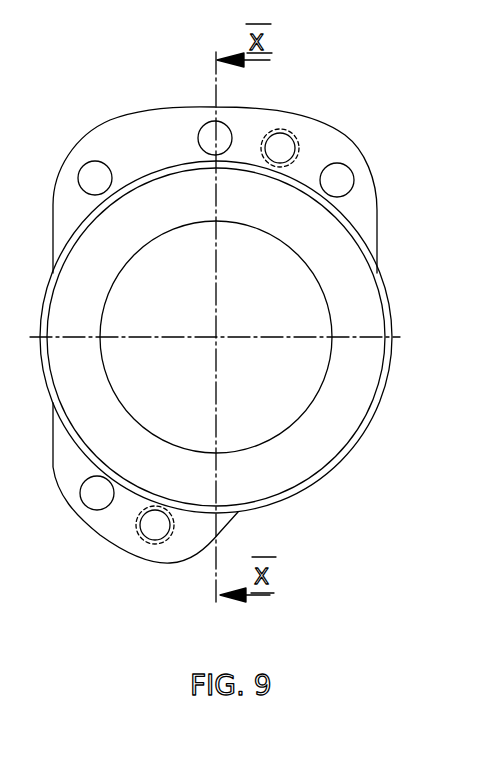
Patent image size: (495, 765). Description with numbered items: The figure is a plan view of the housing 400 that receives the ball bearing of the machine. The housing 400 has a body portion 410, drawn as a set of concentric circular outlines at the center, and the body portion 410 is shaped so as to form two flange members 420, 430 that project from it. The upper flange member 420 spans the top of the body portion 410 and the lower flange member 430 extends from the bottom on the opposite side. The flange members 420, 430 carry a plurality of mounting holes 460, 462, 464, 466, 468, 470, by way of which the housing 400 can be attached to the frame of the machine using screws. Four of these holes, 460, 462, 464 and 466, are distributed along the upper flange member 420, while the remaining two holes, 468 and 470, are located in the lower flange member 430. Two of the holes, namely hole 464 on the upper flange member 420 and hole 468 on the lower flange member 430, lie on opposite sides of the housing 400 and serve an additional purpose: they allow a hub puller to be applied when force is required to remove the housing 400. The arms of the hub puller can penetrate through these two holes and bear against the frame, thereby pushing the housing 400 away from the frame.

The housing 400 is at (242, 342).
The body portion 410 is at (362, 296).
The flange member 420 is at (160, 132).
The flange member 430 is at (120, 524).
The mounting hole 460 is at (90, 173).
The mounting hole 462 is at (222, 133).
The mounting hole 464 is at (282, 148).
The mounting hole 466 is at (342, 182).
The mounting hole 468 is at (155, 530).
The mounting hole 470 is at (87, 498).